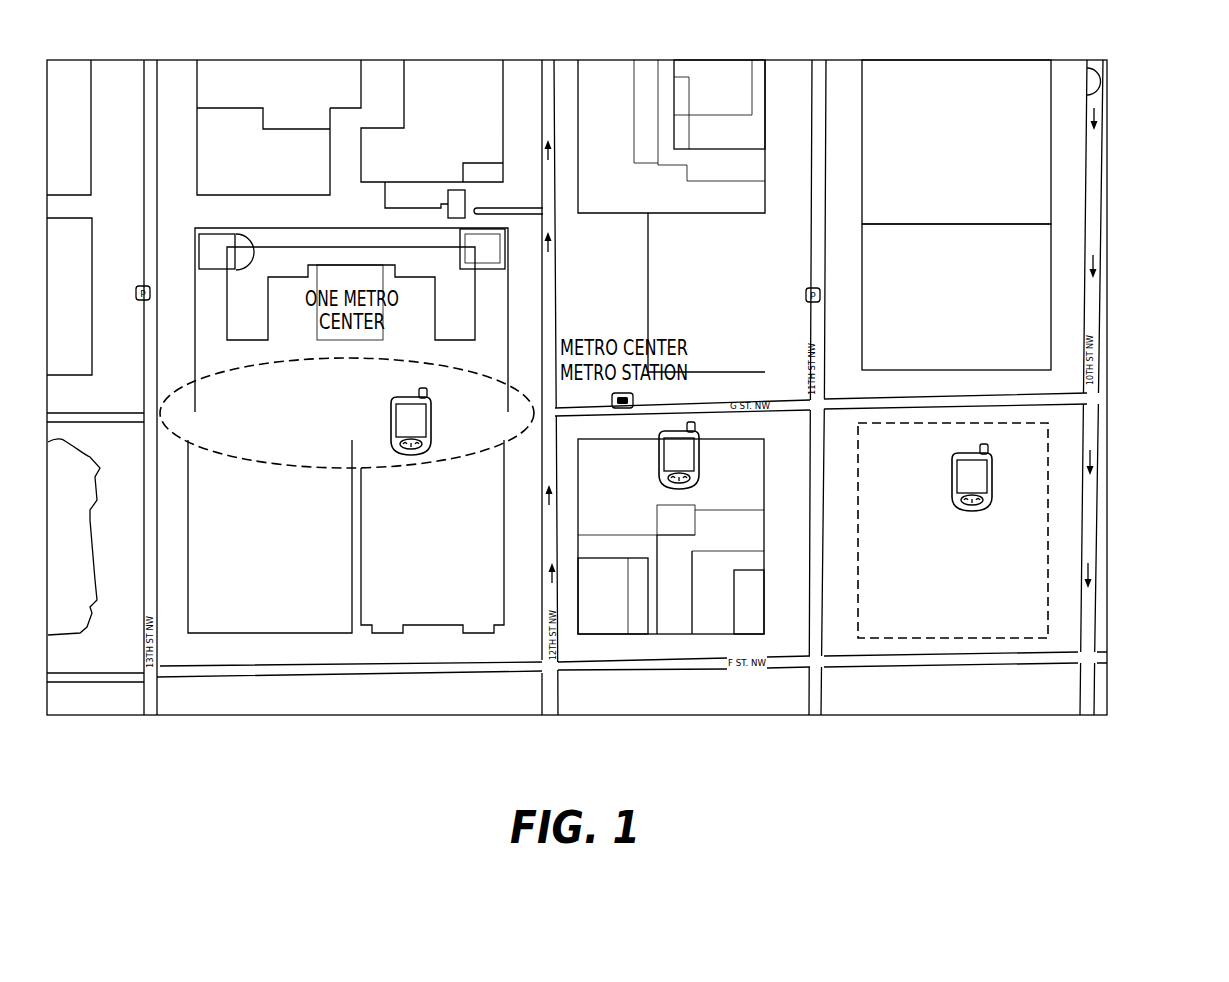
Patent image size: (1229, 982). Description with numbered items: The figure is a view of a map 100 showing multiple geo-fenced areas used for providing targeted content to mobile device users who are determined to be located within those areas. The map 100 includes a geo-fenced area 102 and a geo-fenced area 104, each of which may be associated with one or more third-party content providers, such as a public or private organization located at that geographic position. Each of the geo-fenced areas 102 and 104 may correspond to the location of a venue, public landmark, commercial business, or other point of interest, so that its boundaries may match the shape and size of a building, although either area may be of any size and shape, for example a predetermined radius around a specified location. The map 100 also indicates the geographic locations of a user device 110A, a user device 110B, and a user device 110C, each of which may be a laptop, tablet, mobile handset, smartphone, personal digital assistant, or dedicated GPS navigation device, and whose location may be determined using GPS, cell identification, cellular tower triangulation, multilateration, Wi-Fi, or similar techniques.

The map 100 is at (1154, 88).
The geo-fenced area 102 is at (487, 377).
The geo-fenced area 104 is at (1048, 445).
The user device 110A is at (407, 455).
The user device 110B is at (700, 460).
The user device 110C is at (992, 485).